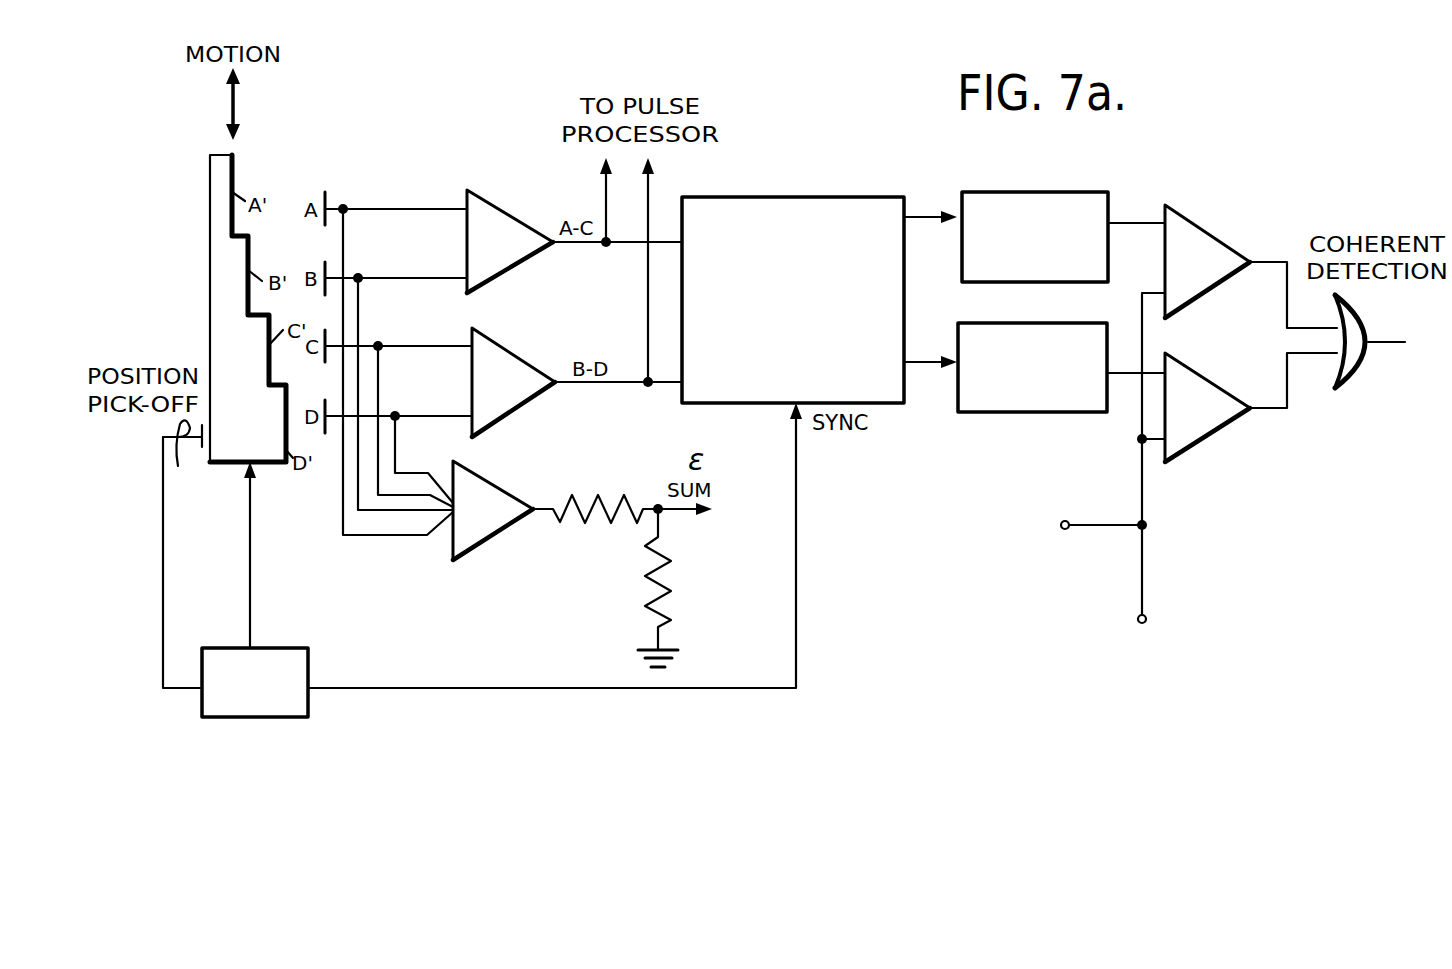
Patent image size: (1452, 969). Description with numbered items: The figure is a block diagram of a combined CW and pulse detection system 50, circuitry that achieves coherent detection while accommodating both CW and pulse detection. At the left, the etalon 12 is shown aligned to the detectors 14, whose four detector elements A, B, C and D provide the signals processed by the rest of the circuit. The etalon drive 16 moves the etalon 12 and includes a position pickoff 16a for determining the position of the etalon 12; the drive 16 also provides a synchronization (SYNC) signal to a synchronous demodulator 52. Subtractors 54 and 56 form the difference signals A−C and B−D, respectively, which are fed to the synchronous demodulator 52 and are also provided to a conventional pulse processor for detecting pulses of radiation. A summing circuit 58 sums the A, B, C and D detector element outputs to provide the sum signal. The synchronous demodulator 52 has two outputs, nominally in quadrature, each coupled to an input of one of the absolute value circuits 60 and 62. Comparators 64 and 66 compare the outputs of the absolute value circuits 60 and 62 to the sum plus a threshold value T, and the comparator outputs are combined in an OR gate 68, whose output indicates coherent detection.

The etalon 12 is at (209, 244).
The detectors 14 is at (338, 168).
The etalon drive 16 is at (283, 648).
The position pickoff 16a is at (187, 463).
The combined CW and pulse detection system 50 is at (1180, 136).
The synchronous demodulator 52 is at (795, 200).
The subtractor 54 is at (495, 201).
The subtractor 56 is at (505, 351).
The summing circuit 58 is at (493, 540).
The absolute value circuit 60 is at (1042, 192).
The absolute value circuit 62 is at (1060, 323).
The comparator 64 is at (1215, 240).
The comparator 66 is at (1205, 378).
The OR gate 68 is at (1370, 360).